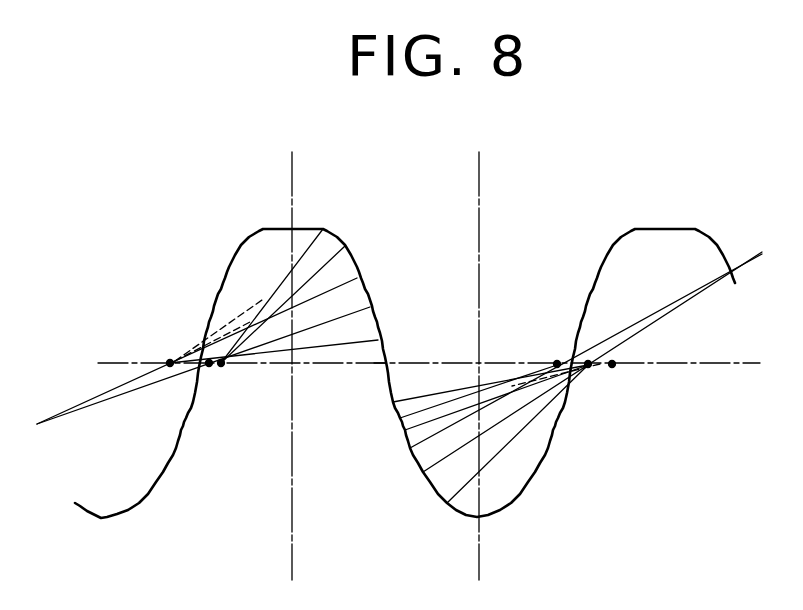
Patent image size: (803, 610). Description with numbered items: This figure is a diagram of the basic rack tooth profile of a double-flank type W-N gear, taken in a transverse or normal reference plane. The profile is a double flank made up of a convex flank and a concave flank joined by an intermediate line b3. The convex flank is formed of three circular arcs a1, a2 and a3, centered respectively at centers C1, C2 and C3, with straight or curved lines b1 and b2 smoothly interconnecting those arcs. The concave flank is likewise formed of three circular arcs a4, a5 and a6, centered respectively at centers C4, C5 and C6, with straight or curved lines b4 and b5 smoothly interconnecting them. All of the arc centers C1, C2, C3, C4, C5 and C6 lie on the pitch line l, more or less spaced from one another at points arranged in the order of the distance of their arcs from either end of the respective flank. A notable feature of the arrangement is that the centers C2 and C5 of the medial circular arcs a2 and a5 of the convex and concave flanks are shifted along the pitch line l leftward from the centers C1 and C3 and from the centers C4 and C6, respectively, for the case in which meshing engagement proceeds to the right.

The circular arc a1 is at (287, 285).
The straight or curved line b1 is at (275, 297).
The circular arc a2 is at (214, 339).
The straight or curved line b2 is at (220, 353).
The circular arc a3 is at (290, 335).
The intermediate line b3 is at (397, 365).
The circular arc a4 is at (476, 390).
The straight or curved line b4 is at (462, 405).
The circular arc a5 is at (480, 416).
The straight or curved line b5 is at (573, 373).
The circular arc a6 is at (582, 381).
The arc center C1 is at (223, 366).
The arc center C2 is at (170, 361).
The arc center C3 is at (209, 366).
The arc center C4 is at (613, 367).
The arc center C5 is at (556, 361).
The arc center C6 is at (590, 361).
The pitch line l is at (429, 352).